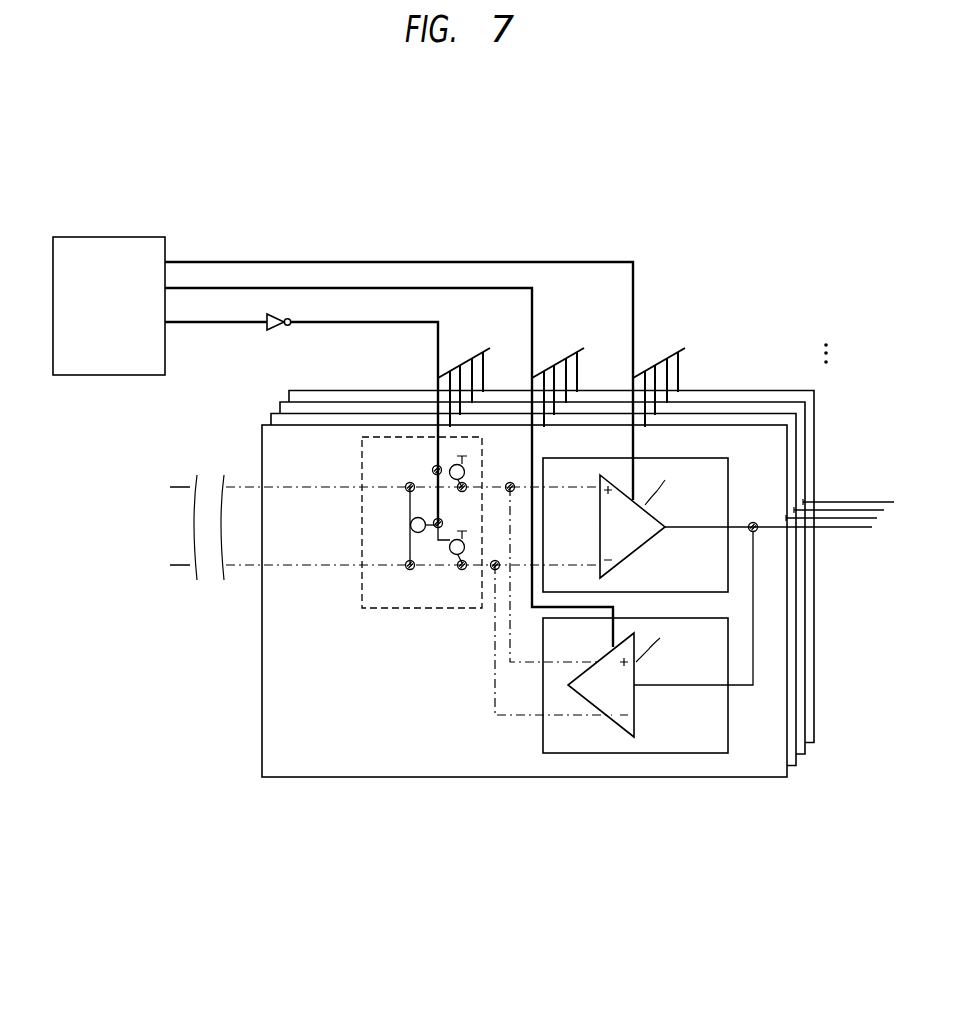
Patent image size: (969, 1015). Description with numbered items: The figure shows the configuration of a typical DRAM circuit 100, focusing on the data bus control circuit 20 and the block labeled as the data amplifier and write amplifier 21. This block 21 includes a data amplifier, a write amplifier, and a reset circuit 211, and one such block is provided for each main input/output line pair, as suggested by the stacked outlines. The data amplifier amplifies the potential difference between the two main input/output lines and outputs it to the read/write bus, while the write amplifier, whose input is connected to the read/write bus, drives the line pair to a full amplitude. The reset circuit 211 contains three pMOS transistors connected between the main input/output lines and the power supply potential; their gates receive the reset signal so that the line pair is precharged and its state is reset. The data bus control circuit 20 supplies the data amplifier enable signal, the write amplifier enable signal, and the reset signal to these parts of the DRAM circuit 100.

The DRAM circuit 100 is at (93, 158).
The data bus control circuit 20 is at (135, 237).
The DAMP/WAMP 21 is at (532, 617).
The reset circuit 211 is at (395, 608).